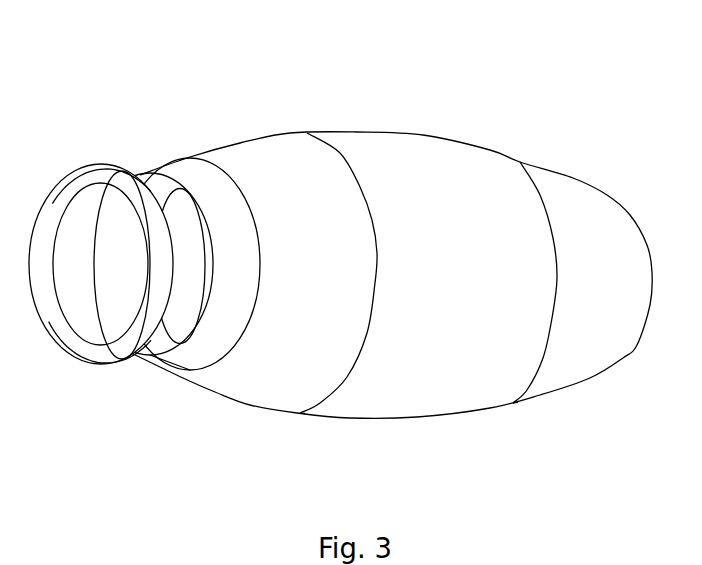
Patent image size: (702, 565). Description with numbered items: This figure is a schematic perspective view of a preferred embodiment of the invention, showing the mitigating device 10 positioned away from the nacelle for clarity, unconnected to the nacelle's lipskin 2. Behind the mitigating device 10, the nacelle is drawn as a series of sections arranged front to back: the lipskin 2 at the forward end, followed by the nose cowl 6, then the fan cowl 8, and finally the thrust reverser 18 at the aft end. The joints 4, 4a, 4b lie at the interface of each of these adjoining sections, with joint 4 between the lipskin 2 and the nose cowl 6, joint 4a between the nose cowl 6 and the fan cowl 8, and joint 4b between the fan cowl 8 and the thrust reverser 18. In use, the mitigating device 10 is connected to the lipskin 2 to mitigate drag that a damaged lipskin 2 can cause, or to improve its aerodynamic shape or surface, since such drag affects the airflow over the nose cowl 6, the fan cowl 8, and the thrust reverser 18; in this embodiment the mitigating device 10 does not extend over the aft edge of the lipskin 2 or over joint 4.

The lipskin 2 is at (158, 152).
The joint 4 is at (513, 483).
The joint 4a is at (297, 430).
The joint 4b is at (513, 427).
The nose cowl 6 is at (249, 130).
The fan cowl 8 is at (409, 123).
The mitigating device 10 is at (91, 153).
The thrust reverser 18 is at (573, 168).